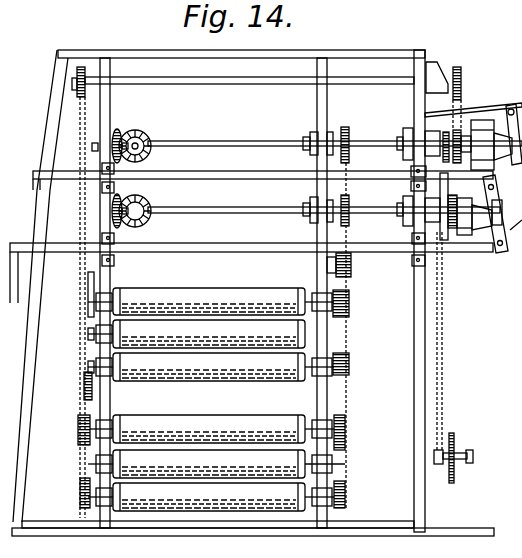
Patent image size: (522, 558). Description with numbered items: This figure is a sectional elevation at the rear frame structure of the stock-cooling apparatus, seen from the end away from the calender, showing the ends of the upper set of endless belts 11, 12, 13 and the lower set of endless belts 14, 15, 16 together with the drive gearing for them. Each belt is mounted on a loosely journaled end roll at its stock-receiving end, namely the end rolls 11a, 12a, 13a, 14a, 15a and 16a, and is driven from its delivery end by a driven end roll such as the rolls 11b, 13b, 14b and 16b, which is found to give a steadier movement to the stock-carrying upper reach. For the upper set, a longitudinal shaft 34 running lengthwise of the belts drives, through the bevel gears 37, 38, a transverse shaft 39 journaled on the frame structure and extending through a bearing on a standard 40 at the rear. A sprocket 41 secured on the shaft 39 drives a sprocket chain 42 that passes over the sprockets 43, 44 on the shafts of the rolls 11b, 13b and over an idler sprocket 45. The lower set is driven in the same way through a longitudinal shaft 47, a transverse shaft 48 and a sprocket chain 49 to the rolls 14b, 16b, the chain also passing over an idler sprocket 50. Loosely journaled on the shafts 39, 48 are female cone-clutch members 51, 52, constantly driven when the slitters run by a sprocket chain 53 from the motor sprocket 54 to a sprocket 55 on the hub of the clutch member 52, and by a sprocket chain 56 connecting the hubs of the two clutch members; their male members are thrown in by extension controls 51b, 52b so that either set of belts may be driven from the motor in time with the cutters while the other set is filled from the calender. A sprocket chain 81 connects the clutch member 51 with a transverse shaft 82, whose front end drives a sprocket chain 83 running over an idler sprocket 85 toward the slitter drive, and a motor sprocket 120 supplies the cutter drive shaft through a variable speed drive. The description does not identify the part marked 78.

The top frame rail 78 is at (341, 55).
The transverse shaft 82 is at (249, 80).
The sprocket chain 83 is at (80, 113).
The bevel gear 38 is at (118, 129).
The bevel gear 37 is at (146, 137).
The transverse shaft 39 is at (245, 141).
The shaft 34 is at (141, 159).
The extension control 51b is at (229, 181).
The sprocket 41 is at (349, 145).
The sprocket chain 56 is at (412, 172).
The sprocket chain 81 is at (460, 103).
The female cone-clutch member 51 is at (483, 126).
The longitudinal shaft 47 is at (149, 203).
The transverse shaft 48 is at (239, 213).
The sprocket chain 42 is at (350, 212).
The extension control 52b is at (237, 252).
The idler sprocket 45 is at (352, 262).
The female cone-clutch member 52 is at (463, 236).
The sprocket 55 is at (445, 232).
The standard 40 is at (421, 347).
The sprocket chain 53 is at (444, 383).
The motor sprocket 54 is at (447, 448).
The motor sprocket 120 is at (452, 481).
The end roll 11a is at (341, 294).
The sprocket 43 is at (350, 304).
The end roll 13a is at (344, 357).
The sprocket 44 is at (350, 364).
The driven end roll 14b is at (316, 418).
The end roll 14a is at (345, 422).
The end roll 15a is at (333, 458).
The end roll 16a is at (345, 489).
The driven end roll 16b is at (309, 510).
The sprocket chain 49 is at (88, 282).
The driven end roll 11b is at (112, 300).
The end roll 12a is at (100, 335).
The driven end roll 13b is at (100, 363).
The idler sprocket 50 is at (86, 378).
The idler sprocket 85 is at (79, 428).
The endless belt 11 is at (209, 301).
The endless belt 12 is at (209, 334).
The endless belt 13 is at (209, 367).
The endless belt 14 is at (209, 429).
The endless belt 15 is at (196, 464).
The endless belt 16 is at (196, 497).